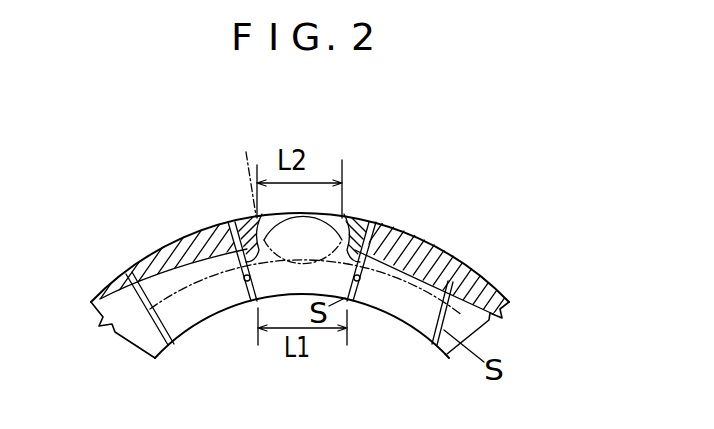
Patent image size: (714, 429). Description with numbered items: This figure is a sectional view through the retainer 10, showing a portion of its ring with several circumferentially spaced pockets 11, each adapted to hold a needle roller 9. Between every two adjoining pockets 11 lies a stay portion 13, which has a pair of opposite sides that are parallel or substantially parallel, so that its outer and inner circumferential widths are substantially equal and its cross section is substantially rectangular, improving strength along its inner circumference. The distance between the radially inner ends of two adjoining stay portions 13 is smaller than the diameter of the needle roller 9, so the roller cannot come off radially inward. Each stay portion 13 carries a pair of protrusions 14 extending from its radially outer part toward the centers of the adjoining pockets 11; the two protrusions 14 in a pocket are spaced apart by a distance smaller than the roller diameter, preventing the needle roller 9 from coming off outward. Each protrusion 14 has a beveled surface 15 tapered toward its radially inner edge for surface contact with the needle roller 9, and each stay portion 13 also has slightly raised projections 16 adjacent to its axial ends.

The needle roller 9 is at (246, 167).
The retainer 10 is at (514, 267).
The pocket 11 is at (340, 216).
The stay portion 13 is at (191, 343).
The protrusion 14 is at (246, 233).
The beveled surface 15 is at (262, 240).
The raised projection 16 is at (196, 260).